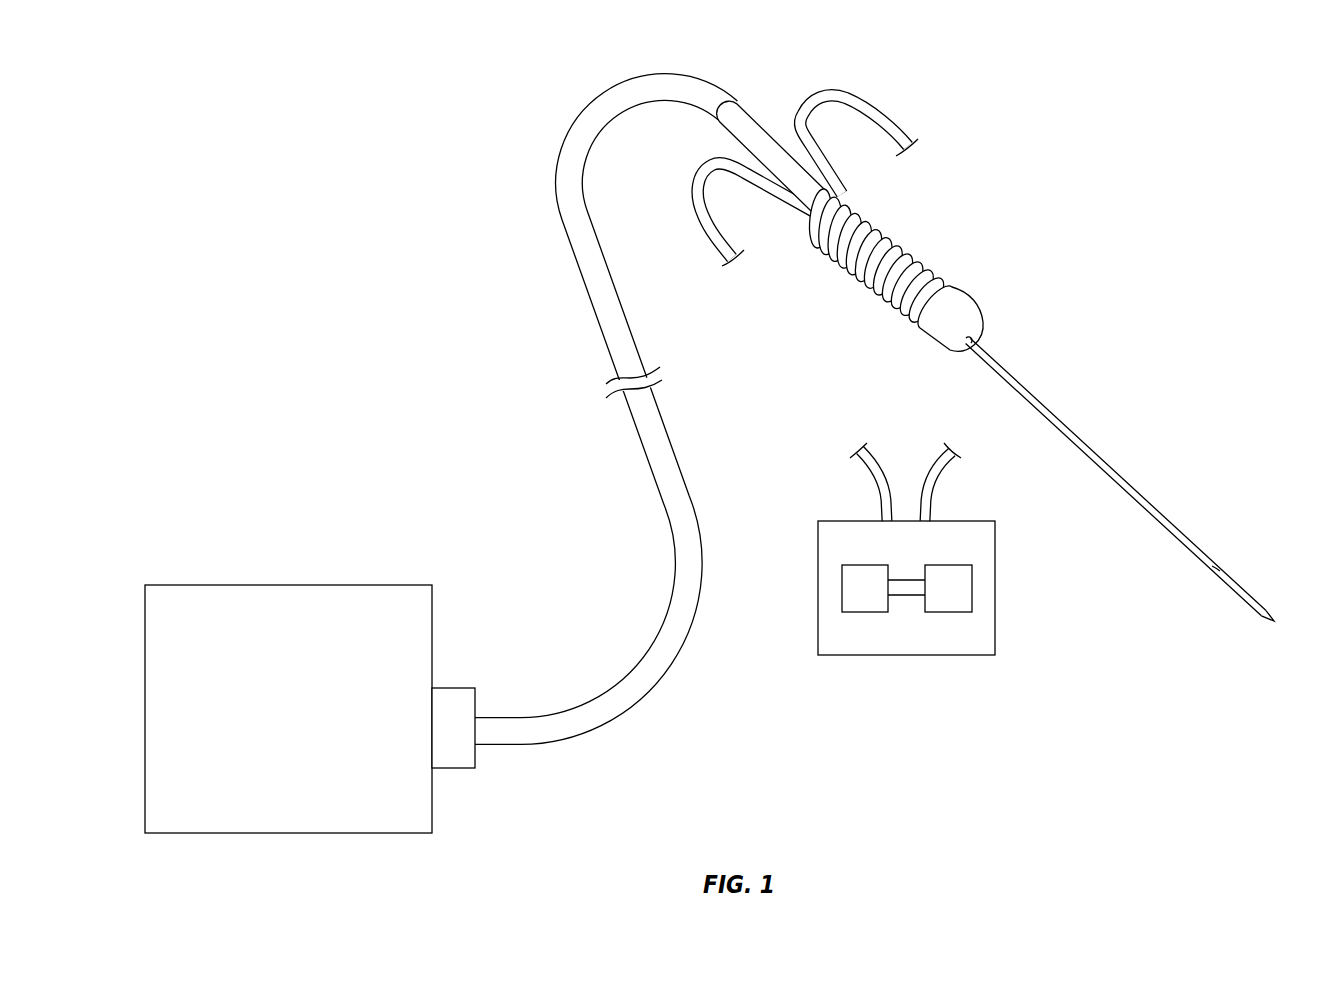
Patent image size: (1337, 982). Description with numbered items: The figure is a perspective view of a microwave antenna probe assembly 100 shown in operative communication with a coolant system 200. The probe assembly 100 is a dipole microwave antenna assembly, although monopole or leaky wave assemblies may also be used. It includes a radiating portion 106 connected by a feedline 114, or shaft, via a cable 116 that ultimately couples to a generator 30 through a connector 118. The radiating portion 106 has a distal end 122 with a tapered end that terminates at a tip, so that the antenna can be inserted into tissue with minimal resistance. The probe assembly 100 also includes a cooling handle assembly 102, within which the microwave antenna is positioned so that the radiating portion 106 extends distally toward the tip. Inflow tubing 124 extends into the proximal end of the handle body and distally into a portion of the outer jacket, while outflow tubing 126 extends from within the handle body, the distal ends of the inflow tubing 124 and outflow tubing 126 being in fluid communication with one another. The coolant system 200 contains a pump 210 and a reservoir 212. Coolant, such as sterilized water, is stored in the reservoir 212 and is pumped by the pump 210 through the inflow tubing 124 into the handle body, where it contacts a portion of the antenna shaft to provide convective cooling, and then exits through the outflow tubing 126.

The microwave antenna probe assembly 100 is at (709, 445).
The generator 30 is at (288, 585).
The cooling handle assembly 102 is at (888, 236).
The radiating portion 106 is at (1110, 462).
The feedline 114 is at (750, 117).
The cable 116 is at (655, 463).
The connector 118 is at (454, 768).
The distal end 122 is at (1268, 620).
The inflow tubing 124 is at (858, 100).
The outflow tubing 126 is at (708, 223).
The coolant system 200 is at (946, 588).
The pump 210 is at (860, 565).
The reservoir 212 is at (948, 612).